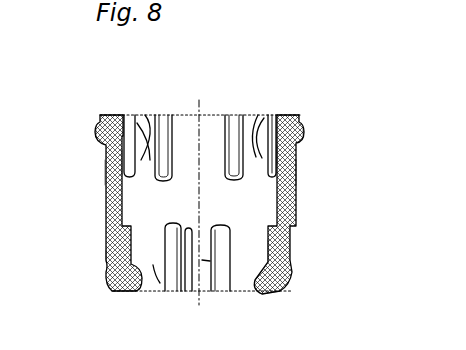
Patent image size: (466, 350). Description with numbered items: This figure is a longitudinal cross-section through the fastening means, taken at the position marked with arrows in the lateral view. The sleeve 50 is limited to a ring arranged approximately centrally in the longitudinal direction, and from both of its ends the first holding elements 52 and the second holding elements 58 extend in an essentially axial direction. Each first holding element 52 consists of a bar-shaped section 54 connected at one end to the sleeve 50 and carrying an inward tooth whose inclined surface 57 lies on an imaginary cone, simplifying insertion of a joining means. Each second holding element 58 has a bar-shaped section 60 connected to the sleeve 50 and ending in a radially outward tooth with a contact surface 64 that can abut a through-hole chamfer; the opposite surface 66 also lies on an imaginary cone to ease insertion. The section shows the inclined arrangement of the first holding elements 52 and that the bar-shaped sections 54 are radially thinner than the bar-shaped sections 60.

The sleeve 50 is at (297, 197).
The first holding element 52 is at (130, 140).
The bar-shaped section 54 is at (103, 247).
The inclined surface 57 is at (140, 292).
The second holding element 58 is at (105, 163).
The bar-shaped section 60 is at (104, 172).
The contact surface 64 is at (95, 142).
The surface 66 is at (98, 130).